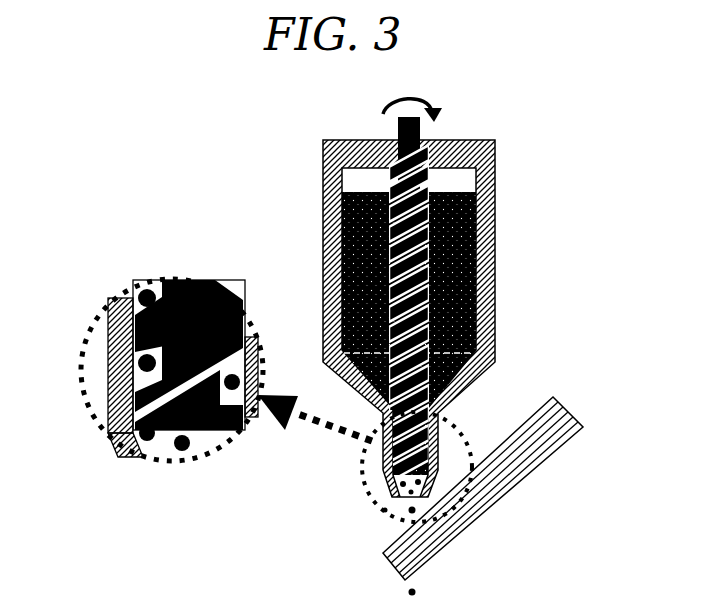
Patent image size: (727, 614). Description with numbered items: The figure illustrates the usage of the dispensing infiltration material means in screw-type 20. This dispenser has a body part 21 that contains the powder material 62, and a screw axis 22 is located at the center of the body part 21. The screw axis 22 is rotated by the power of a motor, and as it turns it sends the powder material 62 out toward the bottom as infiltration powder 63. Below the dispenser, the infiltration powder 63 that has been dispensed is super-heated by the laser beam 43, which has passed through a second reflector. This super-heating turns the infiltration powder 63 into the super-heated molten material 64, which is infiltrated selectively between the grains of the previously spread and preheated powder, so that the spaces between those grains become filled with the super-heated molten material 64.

The dispensing infiltration material means in screw-type 20 is at (444, 285).
The body part 21 is at (495, 233).
The screw 22 is at (397, 123).
The powder material 62 is at (493, 277).
The laser beam 43 is at (540, 447).
The infiltration powder 63 is at (412, 510).
The super-heated molten material 64 is at (415, 591).